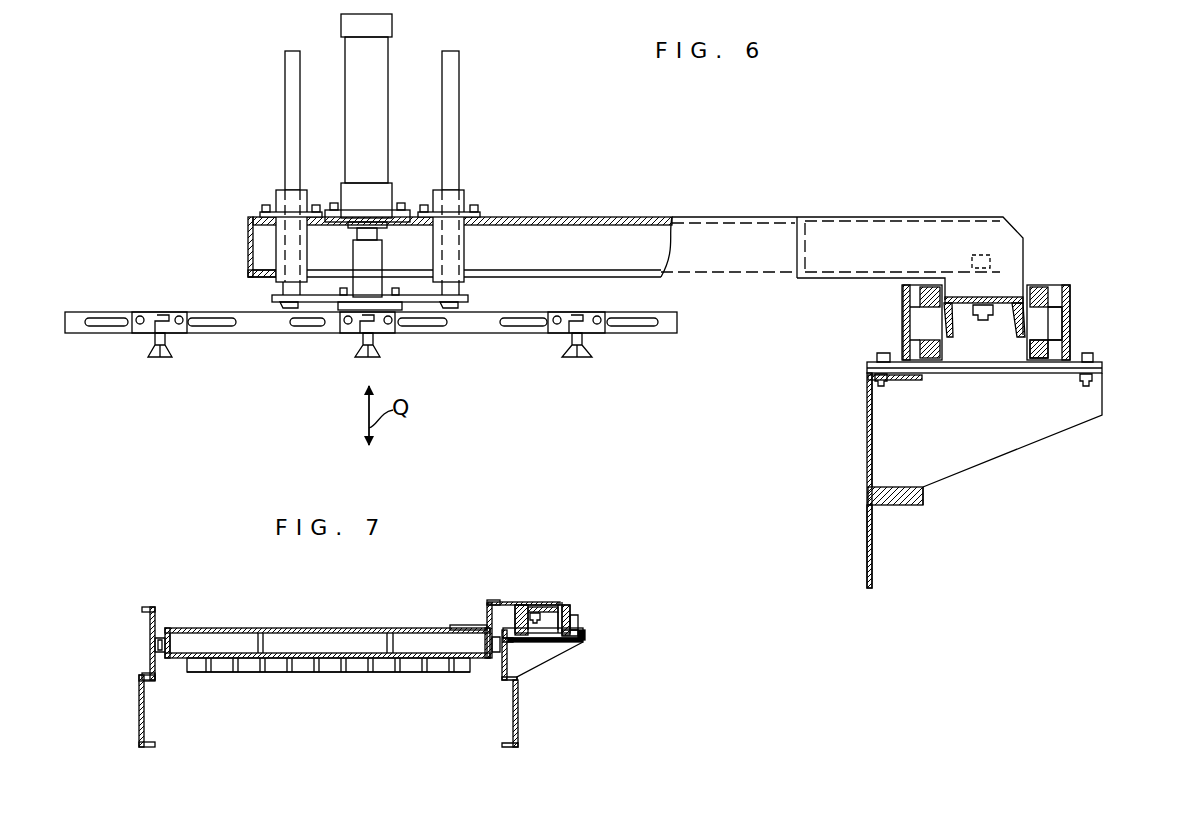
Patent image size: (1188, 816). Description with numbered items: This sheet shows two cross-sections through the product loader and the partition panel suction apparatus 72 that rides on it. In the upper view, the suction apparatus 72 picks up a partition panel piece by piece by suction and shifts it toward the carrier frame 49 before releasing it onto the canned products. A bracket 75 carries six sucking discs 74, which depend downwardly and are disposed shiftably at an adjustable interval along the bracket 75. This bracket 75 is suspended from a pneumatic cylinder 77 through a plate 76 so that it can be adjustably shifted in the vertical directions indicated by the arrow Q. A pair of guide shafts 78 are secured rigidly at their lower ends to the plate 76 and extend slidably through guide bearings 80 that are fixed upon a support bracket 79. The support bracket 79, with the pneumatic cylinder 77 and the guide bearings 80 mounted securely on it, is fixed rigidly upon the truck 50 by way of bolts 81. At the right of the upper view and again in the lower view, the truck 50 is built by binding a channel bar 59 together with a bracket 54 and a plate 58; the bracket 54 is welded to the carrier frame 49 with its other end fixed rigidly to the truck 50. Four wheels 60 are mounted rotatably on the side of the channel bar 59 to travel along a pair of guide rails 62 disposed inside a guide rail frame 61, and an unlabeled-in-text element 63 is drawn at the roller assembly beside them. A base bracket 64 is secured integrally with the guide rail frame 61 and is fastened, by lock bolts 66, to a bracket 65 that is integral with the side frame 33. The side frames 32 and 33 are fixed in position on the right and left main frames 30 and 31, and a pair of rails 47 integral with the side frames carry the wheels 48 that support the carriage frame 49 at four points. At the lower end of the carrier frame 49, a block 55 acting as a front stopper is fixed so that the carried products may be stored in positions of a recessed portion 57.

In FIG. 7, the main frame 30 is at (139, 722).
In FIG. 6, the main frame 31 is at (867, 535).
In FIG. 7, the main frame 31 is at (518, 700).
In FIG. 7, the side frame 32 is at (150, 607).
In FIG. 6, the side frame 33 is at (867, 420).
In FIG. 7, the side frame 33 is at (505, 660).
In FIG. 7, the rail 47 is at (160, 652).
In FIG. 7, the wheel 48 is at (168, 628).
In FIG. 7, the carriage frame 49 is at (310, 628).
In FIG. 7, the truck 50 is at (575, 585).
In FIG. 7, the bracket 54 is at (520, 602).
In FIG. 7, the block 55 is at (328, 670).
In FIG. 7, the recessed portion 57 is at (240, 668).
In FIG. 6, the plate 58 is at (1003, 285).
In FIG. 7, the plate 58 is at (540, 605).
In FIG. 6, the channel bar 59 is at (1020, 327).
In FIG. 7, the channel bar 59 is at (537, 625).
In FIG. 6, the wheel 60 is at (1045, 325).
In FIG. 7, the wheel 60 is at (575, 622).
In FIG. 6, the guide rail frame 61 is at (1063, 282).
In FIG. 7, the guide rail frame 61 is at (567, 612).
In FIG. 6, the guide rail 62 is at (1035, 290).
In FIG. 7, the guide rail 62 is at (530, 610).
In FIG. 6, the roller shaft 63 is at (1060, 350).
In FIG. 7, the roller shaft 63 is at (572, 633).
In FIG. 6, the base bracket 64 is at (1102, 367).
In FIG. 7, the base bracket 64 is at (580, 638).
In FIG. 6, the bracket 65 is at (1098, 377).
In FIG. 7, the bracket 65 is at (578, 642).
In FIG. 6, the lock bolt 66 is at (1090, 355).
In FIG. 7, the lock bolt 66 is at (581, 645).
In FIG. 6, the partition panel suction apparatus 72 is at (624, 185).
In FIG. 6, the sucking disc 74 is at (585, 352).
In FIG. 6, the bracket 75 is at (465, 325).
In FIG. 6, the plate 76 is at (265, 298).
In FIG. 6, the pneumatic cylinder 77 is at (385, 80).
In FIG. 6, the guide shaft 78 is at (290, 112).
In FIG. 6, the support bracket 79 is at (720, 215).
In FIG. 6, the guide bearing 80 is at (280, 195).
In FIG. 6, the bolt 81 is at (972, 258).